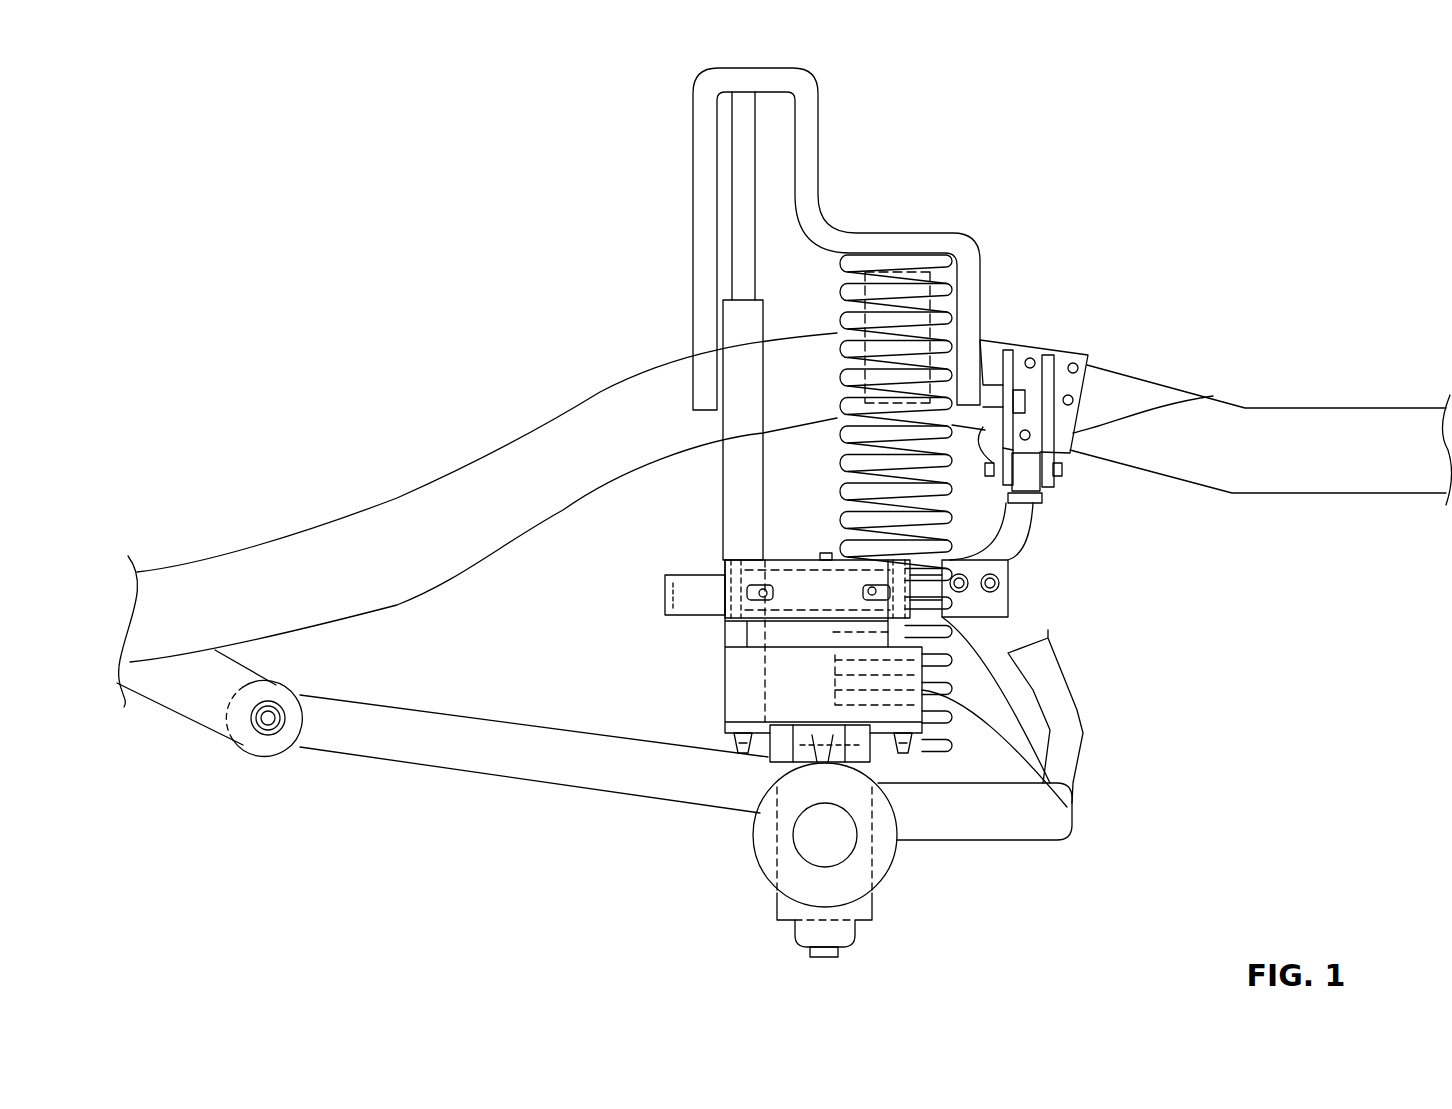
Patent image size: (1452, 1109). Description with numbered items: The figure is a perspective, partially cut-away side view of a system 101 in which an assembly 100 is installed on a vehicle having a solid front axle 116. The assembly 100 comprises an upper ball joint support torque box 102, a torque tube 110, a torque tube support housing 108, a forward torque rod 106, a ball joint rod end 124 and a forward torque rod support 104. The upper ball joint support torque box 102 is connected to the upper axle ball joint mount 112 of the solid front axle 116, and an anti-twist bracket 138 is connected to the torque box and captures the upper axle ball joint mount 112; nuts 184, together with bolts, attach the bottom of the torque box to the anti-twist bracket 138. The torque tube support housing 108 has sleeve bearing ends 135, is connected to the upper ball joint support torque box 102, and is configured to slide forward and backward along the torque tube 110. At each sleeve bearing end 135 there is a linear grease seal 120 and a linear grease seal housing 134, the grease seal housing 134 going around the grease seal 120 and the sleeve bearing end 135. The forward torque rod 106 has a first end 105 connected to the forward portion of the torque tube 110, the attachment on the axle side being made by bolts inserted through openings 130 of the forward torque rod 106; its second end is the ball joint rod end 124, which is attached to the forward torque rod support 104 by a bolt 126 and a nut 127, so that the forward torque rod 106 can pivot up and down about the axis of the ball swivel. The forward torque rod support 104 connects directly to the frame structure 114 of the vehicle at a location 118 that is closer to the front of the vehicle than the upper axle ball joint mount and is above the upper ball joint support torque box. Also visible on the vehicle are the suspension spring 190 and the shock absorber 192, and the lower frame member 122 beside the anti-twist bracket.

The assembly 100 is at (1008, 600).
The system 101 is at (997, 312).
The upper ball joint support torque box 102 is at (1067, 751).
The forward torque rod support 104 is at (1040, 380).
The first end 105 is at (1009, 617).
The forward torque rod 106 is at (1011, 530).
The torque tube support housing 108 is at (763, 630).
The torque tube 110 is at (690, 575).
The upper axle ball joint mount 112 is at (787, 742).
The frame structure 114 is at (672, 388).
The solid front axle 116 is at (845, 902).
The location 118 is at (1128, 415).
The linear grease seal 120 is at (743, 560).
The lower frame member 122 is at (1072, 806).
The ball joint rod end 124 is at (1208, 404).
The bolt 126 is at (1062, 466).
The nut 127 is at (985, 432).
The openings 130 is at (1000, 603).
The linear grease seal housing 134 is at (723, 605).
The sleeve bearing ends 135 is at (738, 560).
The anti-twist bracket 138 is at (757, 810).
The nuts 184 is at (742, 748).
The suspension spring 190 is at (848, 260).
The shock absorber 192 is at (742, 128).